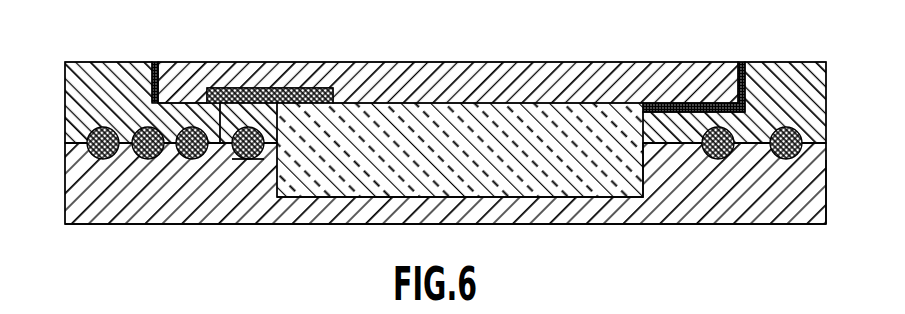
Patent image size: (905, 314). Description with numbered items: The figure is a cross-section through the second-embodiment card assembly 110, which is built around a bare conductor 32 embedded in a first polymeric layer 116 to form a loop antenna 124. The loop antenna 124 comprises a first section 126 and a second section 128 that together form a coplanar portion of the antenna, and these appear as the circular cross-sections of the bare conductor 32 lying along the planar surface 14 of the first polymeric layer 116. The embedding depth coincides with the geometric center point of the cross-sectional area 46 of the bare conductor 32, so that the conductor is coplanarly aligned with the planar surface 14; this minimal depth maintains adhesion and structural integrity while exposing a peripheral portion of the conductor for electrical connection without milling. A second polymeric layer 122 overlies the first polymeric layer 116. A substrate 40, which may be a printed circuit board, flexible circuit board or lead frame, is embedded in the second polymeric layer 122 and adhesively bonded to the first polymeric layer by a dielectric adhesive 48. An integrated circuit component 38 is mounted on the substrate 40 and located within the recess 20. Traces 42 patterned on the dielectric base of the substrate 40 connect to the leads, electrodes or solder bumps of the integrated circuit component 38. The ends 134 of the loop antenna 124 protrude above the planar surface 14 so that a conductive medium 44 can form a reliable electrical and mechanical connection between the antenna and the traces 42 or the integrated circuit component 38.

The card assembly 110 is at (445, 21).
The second polymeric layer 122 is at (70, 103).
The dielectric adhesive 48 is at (155, 62).
The conductive medium 44 is at (238, 113).
The traces 42 is at (265, 88).
The substrate 40 is at (648, 62).
The planar surface 14 is at (820, 138).
The second section 128 is at (92, 157).
The bare conductor 32 is at (827, 188).
The first polymeric layer 116 is at (827, 213).
The integrated circuit component 38 is at (458, 168).
The recess 20 is at (652, 198).
The first section 126 is at (198, 150).
The loop antenna 124 is at (182, 158).
The cross-sectional area 46 is at (240, 157).
The ends 134 is at (246, 157).